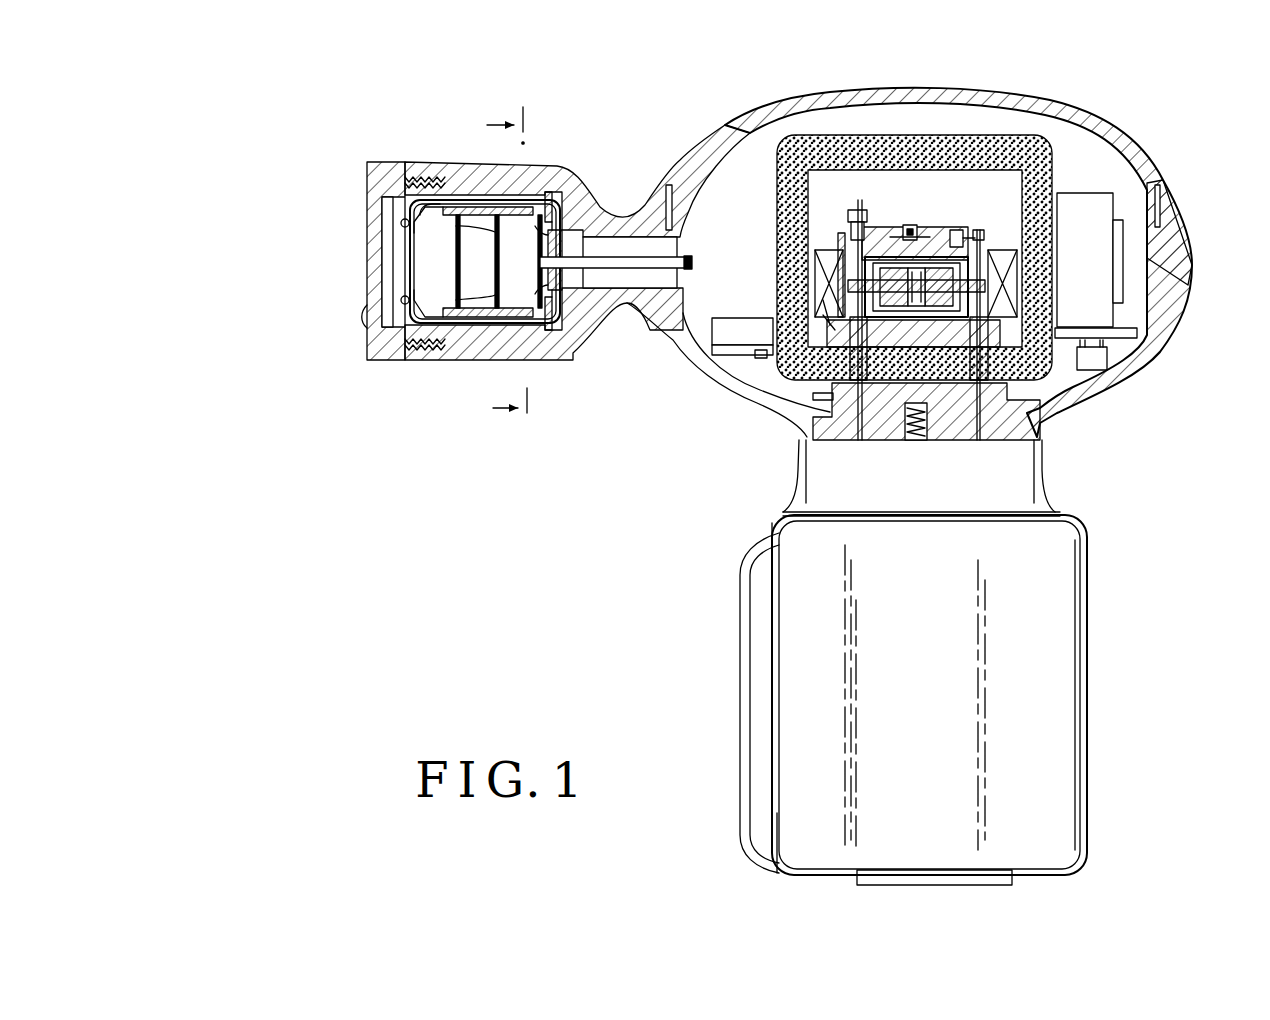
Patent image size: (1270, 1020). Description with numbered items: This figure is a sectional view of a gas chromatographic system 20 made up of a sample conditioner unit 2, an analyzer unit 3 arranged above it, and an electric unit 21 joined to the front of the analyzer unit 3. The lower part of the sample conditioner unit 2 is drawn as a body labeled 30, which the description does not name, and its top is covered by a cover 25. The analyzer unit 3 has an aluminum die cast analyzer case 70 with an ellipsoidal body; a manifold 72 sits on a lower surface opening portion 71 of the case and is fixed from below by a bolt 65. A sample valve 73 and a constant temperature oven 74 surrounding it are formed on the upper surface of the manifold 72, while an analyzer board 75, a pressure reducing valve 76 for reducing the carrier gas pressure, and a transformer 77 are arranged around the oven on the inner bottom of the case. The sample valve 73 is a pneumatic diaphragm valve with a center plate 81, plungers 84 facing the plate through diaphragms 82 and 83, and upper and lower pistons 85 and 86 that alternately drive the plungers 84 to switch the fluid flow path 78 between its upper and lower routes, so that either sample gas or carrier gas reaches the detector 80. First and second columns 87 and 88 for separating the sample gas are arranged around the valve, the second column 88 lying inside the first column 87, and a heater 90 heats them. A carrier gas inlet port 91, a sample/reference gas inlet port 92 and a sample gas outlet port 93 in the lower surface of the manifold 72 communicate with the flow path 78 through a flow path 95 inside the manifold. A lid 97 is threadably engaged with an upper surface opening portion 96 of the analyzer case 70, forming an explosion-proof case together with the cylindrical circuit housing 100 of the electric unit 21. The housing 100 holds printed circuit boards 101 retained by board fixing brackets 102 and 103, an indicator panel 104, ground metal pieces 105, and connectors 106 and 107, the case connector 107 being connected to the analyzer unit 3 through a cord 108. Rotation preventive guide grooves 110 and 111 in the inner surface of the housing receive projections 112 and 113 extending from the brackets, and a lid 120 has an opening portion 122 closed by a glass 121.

The sample conditioner unit 2 is at (955, 700).
The analyzer unit 3 is at (971, 301).
The gas chromatographic system 20 is at (765, 56).
The electric unit 21 is at (564, 301).
The cover 25 is at (949, 483).
The battery case 30 is at (942, 700).
The bolt 65 is at (916, 422).
The analyzer case 70 is at (958, 262).
The lower surface opening portion 71 is at (915, 474).
The manifold 72 is at (922, 454).
The sample valve 73 is at (725, 416).
The constant temperature oven 74 is at (914, 208).
The analyzer board 75 is at (1179, 355).
The pressure reducing valve 76 is at (728, 370).
The transformer 77 is at (1143, 260).
The fluid flow path 78 is at (929, 398).
The detector 80 is at (915, 148).
The center plate 81 is at (1054, 250).
The diaphragm 82 is at (1039, 206).
The diaphragm 83 is at (971, 394).
The plungers 84 is at (871, 271).
The upper piston 85 is at (925, 138).
The lower piston 86 is at (932, 411).
The first column 87 is at (870, 273).
The second column 88 is at (784, 254).
The heater 90 is at (781, 300).
The carrier gas inlet port 91 is at (911, 416).
The sample/reference gas inlet port 92 is at (943, 441).
The sample gas outlet port 93 is at (842, 472).
The flow path 95 is at (969, 502).
The upper surface opening portion 96 is at (682, 160).
The lid 97 is at (1041, 76).
The circuit housing 100 is at (569, 230).
The printed circuit boards 101 is at (420, 261).
The board fixing bracket 102 is at (490, 201).
The board fixing bracket 103 is at (440, 385).
The indicator panel 104 is at (416, 262).
The ground metal pieces 105 is at (361, 308).
The connector 106 is at (589, 218).
The case connector 107 is at (589, 231).
The cord 108 is at (616, 309).
The rotation preventive guide groove 110 is at (455, 131).
The rotation preventive guide groove 111 is at (484, 364).
The projection 112 is at (514, 161).
The projection 113 is at (566, 307).
The lid 120 is at (377, 303).
The glass 121 is at (346, 262).
The opening portion 122 is at (348, 348).